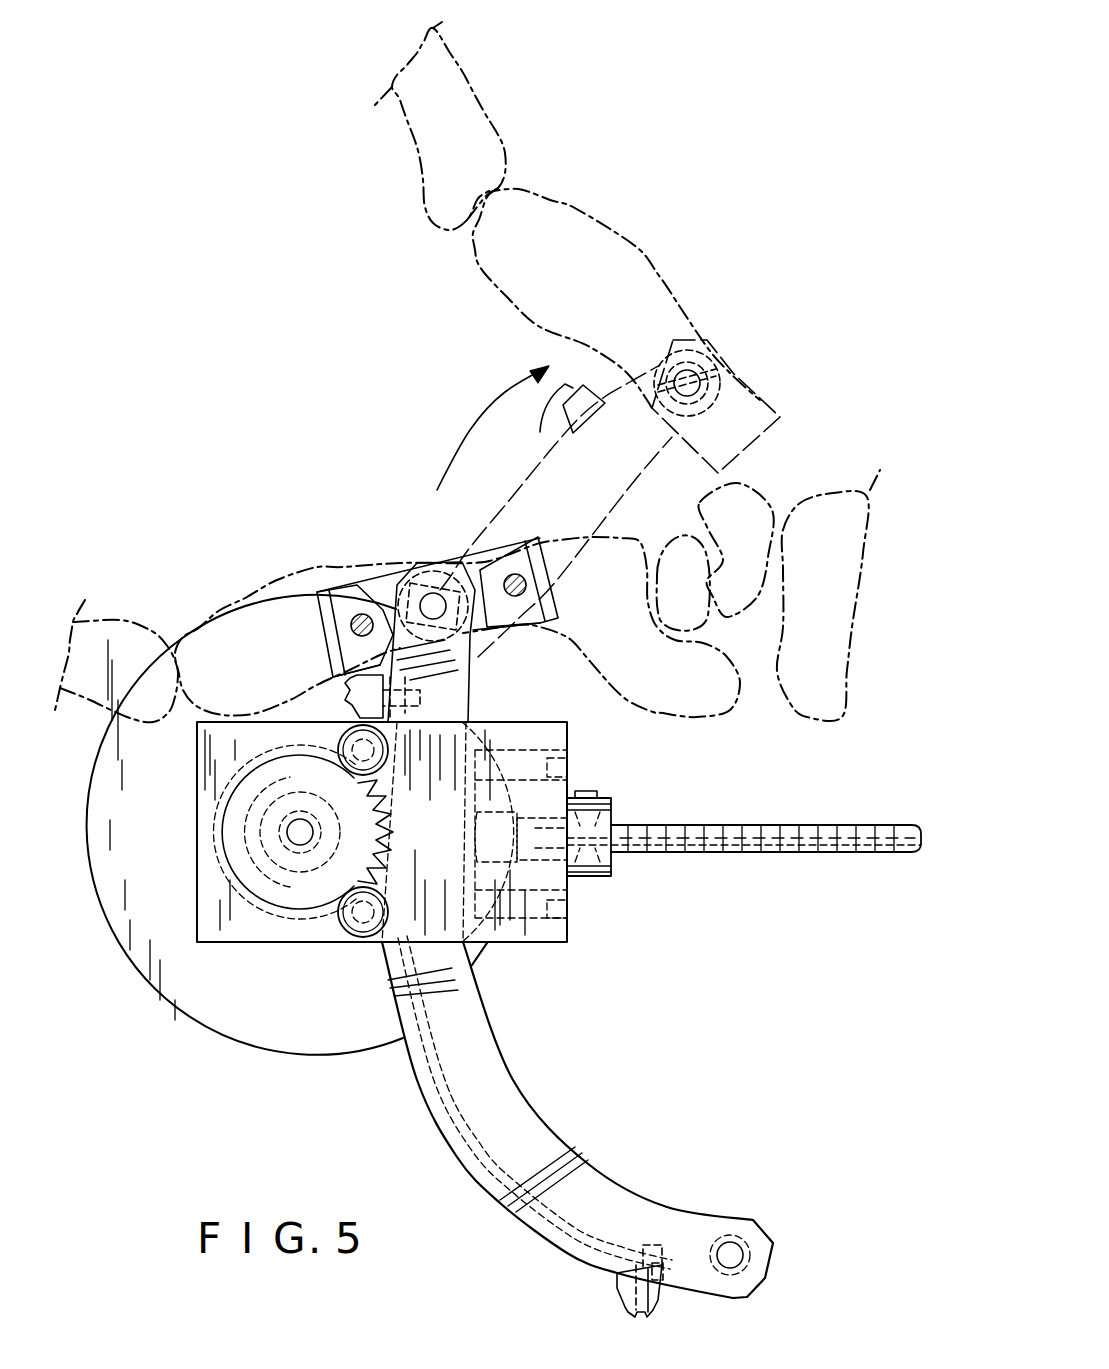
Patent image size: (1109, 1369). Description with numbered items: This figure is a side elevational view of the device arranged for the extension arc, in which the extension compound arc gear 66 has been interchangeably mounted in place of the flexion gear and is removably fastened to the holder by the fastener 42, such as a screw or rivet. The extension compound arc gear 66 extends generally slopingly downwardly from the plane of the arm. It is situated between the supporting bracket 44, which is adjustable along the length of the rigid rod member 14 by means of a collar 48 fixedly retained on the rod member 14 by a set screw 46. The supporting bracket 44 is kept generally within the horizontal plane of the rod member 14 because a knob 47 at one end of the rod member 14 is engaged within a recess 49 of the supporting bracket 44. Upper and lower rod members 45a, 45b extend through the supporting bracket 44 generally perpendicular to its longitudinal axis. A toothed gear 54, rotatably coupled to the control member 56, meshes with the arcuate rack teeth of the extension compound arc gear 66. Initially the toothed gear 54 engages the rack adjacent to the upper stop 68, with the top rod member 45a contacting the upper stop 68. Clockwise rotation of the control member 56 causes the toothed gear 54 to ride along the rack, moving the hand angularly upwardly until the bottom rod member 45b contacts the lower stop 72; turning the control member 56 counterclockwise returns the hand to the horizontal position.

The rigid rod member 14 is at (757, 830).
The fastener 42 is at (433, 603).
The supporting bracket 44 is at (512, 722).
The upper rod member 45a is at (350, 722).
The lower rod member 45b is at (340, 930).
The set screw 46 is at (588, 792).
The knob 47 is at (570, 860).
The collar 48 is at (612, 812).
The recess 49 is at (568, 880).
The toothed gear 54 is at (217, 832).
The control member 56 is at (107, 933).
The extension compound arc gear 66 is at (577, 1010).
The upper stop 68 is at (555, 404).
The lower stop 72 is at (625, 1306).